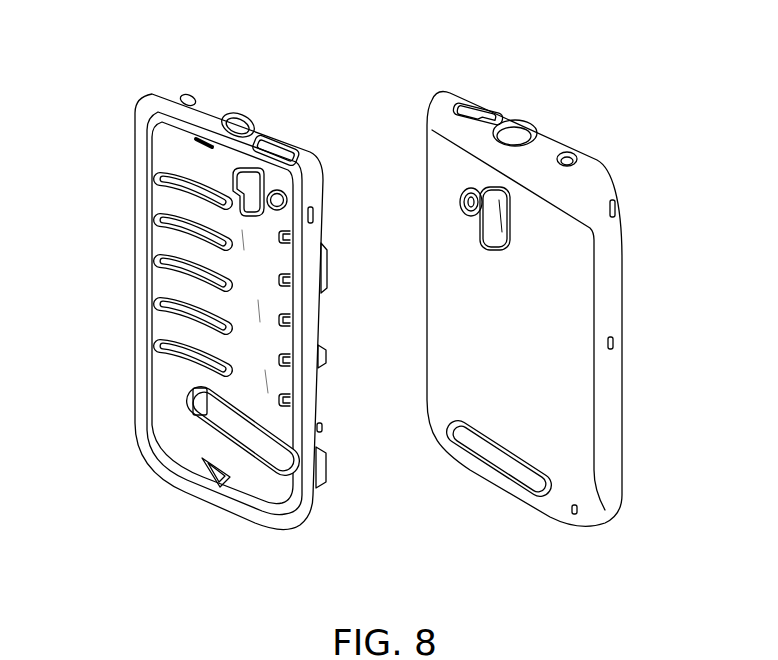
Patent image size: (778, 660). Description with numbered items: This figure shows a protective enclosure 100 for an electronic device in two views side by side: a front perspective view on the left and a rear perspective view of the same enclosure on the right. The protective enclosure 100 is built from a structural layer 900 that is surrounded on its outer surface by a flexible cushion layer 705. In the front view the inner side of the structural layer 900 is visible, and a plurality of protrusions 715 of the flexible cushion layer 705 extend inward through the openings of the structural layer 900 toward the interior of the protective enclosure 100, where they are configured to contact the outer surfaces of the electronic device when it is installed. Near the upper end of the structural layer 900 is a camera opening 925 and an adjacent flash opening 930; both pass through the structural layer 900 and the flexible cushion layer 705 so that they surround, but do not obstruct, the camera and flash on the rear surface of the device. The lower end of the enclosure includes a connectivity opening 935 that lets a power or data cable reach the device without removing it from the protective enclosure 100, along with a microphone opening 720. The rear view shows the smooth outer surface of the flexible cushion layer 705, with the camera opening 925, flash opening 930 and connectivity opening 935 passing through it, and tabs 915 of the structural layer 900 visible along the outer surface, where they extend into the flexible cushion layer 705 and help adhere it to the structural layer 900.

The protective enclosure 100 is at (572, 270).
The flexible cushion layer 705 is at (595, 300).
The protrusions 715 is at (200, 142).
The microphone opening 720 is at (218, 478).
The structural layer 900 is at (292, 306).
The tabs 915 is at (617, 340).
The camera opening 925 is at (255, 190).
The flash opening 930 is at (283, 195).
The connectivity opening 935 is at (262, 437).